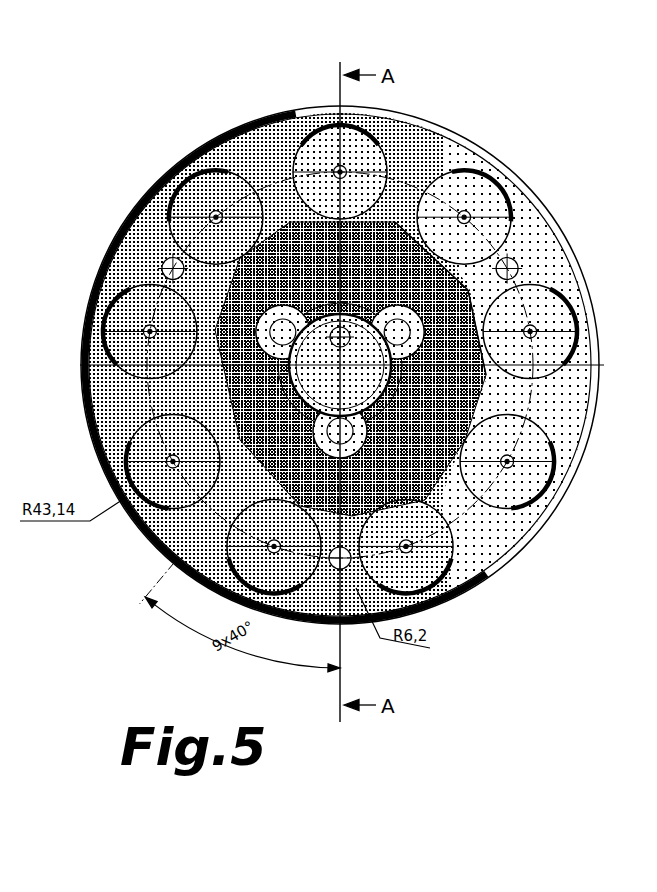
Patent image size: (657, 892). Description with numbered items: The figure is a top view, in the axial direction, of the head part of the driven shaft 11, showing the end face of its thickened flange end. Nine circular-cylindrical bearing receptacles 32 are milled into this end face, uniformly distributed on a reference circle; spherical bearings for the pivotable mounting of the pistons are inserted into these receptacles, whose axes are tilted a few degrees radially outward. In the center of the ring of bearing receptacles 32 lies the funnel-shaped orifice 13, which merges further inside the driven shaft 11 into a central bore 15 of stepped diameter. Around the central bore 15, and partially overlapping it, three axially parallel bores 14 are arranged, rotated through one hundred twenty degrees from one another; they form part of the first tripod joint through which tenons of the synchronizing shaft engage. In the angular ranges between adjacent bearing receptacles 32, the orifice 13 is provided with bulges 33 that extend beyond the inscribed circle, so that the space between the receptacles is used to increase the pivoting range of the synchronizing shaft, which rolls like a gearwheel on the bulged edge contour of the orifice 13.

The driven shaft 11 is at (253, 143).
The funnel-shaped orifice 13 is at (441, 465).
The axially parallel bores 14 is at (251, 310).
The central bore 15 is at (308, 398).
The bearing receptacles 32 is at (485, 178).
The bulges 33 is at (483, 274).